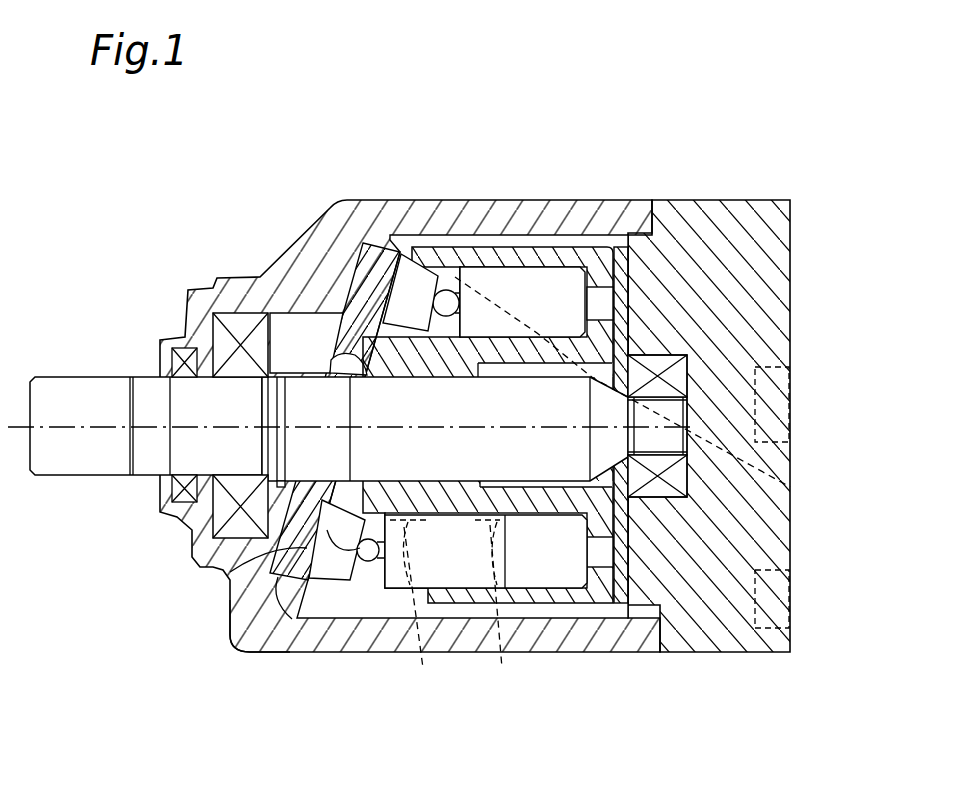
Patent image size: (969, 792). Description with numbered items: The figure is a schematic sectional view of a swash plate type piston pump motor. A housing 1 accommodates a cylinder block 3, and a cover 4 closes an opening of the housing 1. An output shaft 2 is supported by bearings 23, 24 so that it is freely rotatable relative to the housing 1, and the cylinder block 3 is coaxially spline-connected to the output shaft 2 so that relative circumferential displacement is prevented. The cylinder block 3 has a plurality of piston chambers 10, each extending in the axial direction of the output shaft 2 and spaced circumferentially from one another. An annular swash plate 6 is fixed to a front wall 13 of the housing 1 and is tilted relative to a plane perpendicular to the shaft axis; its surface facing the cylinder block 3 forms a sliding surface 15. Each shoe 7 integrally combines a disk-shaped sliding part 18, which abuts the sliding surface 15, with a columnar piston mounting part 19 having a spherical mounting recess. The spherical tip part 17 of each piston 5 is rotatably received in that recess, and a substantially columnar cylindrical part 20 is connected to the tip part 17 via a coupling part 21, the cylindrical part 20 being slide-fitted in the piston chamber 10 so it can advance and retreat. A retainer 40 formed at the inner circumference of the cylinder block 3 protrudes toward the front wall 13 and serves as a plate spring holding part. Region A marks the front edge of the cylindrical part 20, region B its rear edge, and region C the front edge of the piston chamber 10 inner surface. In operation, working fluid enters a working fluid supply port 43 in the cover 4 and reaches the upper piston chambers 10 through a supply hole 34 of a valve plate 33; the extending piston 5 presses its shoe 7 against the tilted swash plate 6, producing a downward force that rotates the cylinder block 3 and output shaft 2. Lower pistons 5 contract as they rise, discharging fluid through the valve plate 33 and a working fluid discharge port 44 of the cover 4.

The housing 1 is at (562, 253).
The output shaft 2 is at (85, 390).
The cylinder block 3 is at (600, 575).
The cover 4 is at (716, 625).
The piston 5 is at (527, 277).
The annular swash plate 6 is at (350, 277).
The shoe 7 is at (327, 575).
The piston chamber 10 is at (550, 590).
The front wall 13 is at (292, 240).
The sliding surface 15 is at (403, 270).
The tip part 17 is at (362, 575).
The sliding part 18 is at (230, 577).
The piston mounting part 19 is at (230, 633).
The cylindrical part 20 is at (560, 237).
The coupling part 21 is at (368, 576).
The bearing 23 is at (237, 322).
The bearing 24 is at (662, 348).
The valve plate 33 is at (622, 305).
The supply hole 34 is at (652, 357).
The retainer 40 is at (330, 310).
The working fluid supply port 43 is at (772, 413).
The working fluid discharge port 44 is at (775, 632).
The region A is at (416, 612).
The region B is at (500, 611).
The region C is at (793, 487).